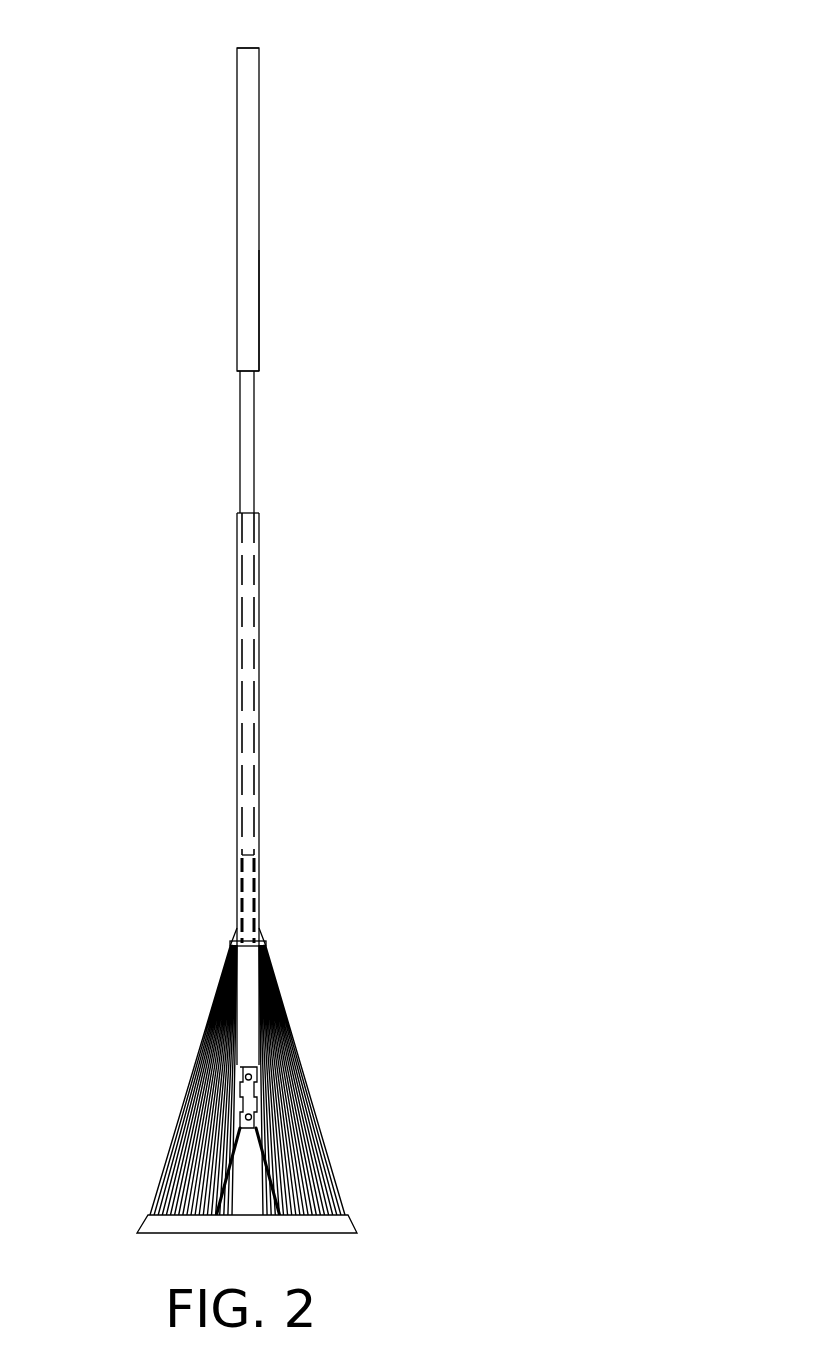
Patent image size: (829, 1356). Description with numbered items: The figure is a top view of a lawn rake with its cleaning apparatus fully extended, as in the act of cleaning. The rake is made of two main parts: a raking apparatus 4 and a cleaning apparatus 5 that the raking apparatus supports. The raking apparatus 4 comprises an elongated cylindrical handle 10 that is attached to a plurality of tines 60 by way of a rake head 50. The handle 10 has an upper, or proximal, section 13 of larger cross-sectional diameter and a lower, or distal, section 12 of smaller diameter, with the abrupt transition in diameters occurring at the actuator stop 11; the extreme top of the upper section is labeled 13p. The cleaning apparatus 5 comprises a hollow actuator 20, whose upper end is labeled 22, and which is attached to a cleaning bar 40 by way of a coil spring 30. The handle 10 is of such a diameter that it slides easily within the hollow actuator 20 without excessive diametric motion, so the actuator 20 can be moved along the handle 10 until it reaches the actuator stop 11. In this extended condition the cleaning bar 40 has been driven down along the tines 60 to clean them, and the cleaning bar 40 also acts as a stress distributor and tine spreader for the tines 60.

The raking apparatus 4 is at (198, 401).
The cleaning apparatus 5 is at (212, 635).
The handle 10 is at (260, 302).
The actuator stop 11 is at (262, 372).
The lower section 12 is at (256, 445).
The upper section 13 is at (260, 205).
The top end of handle grip 13p is at (262, 46).
The hollow actuator 20 is at (260, 706).
The upper end of tubular shaft 22 is at (259, 516).
The coil spring 30 is at (267, 1165).
The cleaning bar 40 is at (357, 1218).
The rake head 50 is at (260, 890).
The tines 60 is at (187, 1092).